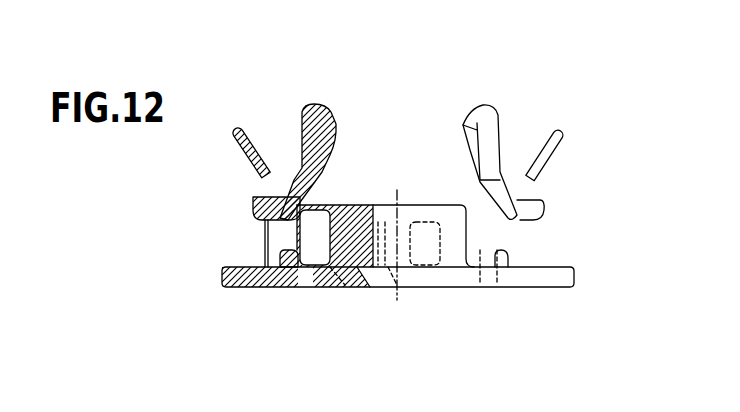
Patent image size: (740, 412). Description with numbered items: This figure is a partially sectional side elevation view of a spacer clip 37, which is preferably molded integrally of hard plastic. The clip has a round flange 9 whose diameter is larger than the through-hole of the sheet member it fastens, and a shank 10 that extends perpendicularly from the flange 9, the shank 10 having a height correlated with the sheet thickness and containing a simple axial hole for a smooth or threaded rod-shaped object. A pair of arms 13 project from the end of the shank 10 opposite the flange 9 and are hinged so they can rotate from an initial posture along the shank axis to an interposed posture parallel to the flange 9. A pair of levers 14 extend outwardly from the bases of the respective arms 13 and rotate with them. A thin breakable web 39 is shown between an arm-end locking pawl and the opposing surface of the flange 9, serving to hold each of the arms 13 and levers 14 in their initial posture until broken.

The flange 9 is at (252, 290).
The shank 10 is at (468, 235).
The arms 13 is at (462, 131).
The levers 14 is at (262, 177).
The spacer clip 37 is at (563, 104).
The breakable web 39 is at (265, 248).